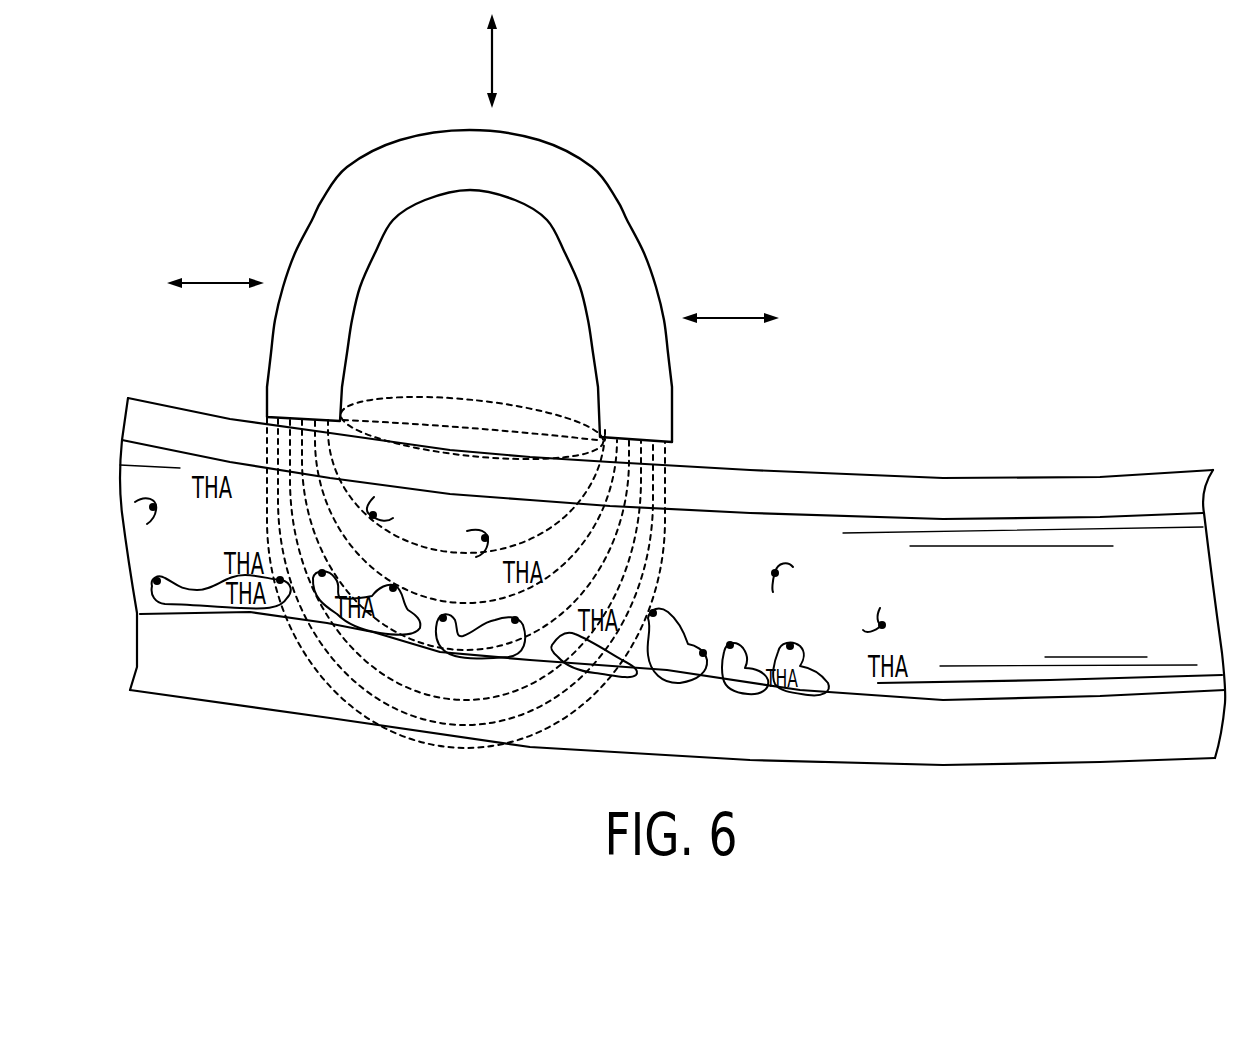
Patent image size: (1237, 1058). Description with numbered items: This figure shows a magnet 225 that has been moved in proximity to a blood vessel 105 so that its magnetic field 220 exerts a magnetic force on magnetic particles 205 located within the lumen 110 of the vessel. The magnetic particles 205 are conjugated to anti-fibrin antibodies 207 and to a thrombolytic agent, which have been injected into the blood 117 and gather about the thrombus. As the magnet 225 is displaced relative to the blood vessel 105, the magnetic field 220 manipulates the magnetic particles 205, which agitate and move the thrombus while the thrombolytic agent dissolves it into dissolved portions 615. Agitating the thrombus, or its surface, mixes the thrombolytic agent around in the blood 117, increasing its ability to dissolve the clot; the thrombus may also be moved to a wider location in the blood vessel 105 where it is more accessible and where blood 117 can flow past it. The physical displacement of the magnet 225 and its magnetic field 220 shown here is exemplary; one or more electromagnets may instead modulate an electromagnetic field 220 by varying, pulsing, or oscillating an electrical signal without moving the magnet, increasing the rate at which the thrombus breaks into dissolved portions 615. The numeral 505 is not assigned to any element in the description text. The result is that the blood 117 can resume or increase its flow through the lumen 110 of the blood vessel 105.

The blood vessel 105 is at (733, 470).
The lumen 110 is at (987, 568).
The blood 117 is at (1092, 621).
The magnetic particles 205 is at (884, 630).
The anti-fibrin antibodies 207 is at (723, 682).
The magnetic field 220 is at (472, 394).
The magnet 225 is at (323, 202).
The free-flowing cells 505 is at (833, 580).
The dissolved portions 615 is at (197, 597).